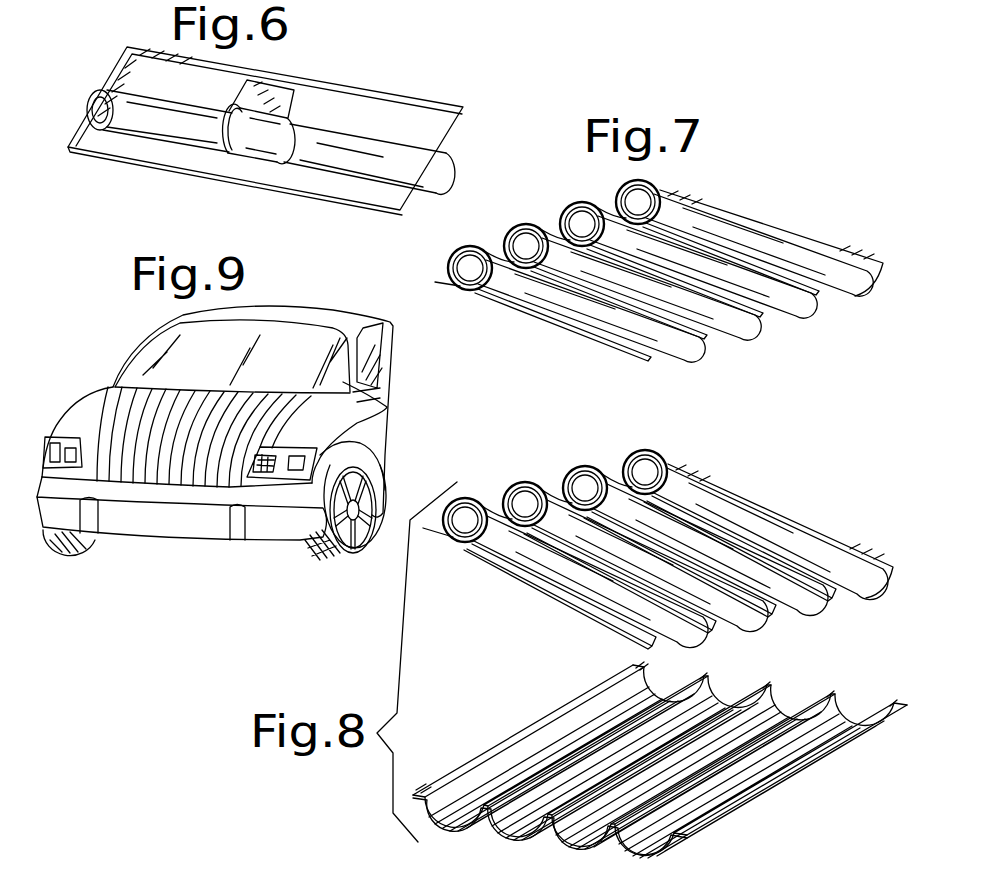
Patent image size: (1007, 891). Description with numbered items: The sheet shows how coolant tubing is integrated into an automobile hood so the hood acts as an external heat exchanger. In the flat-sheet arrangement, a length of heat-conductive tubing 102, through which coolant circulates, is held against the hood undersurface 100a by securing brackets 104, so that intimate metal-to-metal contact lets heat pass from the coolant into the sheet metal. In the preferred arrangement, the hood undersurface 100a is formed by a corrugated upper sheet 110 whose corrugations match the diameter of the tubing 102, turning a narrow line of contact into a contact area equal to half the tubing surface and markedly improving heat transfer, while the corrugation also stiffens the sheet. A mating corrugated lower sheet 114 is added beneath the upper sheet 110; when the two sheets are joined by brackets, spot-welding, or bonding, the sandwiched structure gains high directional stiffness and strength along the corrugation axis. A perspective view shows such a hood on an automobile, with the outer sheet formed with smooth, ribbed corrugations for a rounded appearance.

In FIG. 6, the undersurface of the top sheet 100a is at (330, 98).
In FIG. 7, the undersurface of the top sheet 100a is at (825, 227).
In FIG. 6, the heat-conductive tubing 102 is at (150, 132).
In FIG. 7, the heat-conductive tubing 102 is at (642, 243).
In FIG. 6, the securing brackets 104 is at (250, 152).
In FIG. 8, the corrugated upper sheet 110 is at (667, 462).
In FIG. 8, the corrugated lower sheet 114 is at (575, 707).